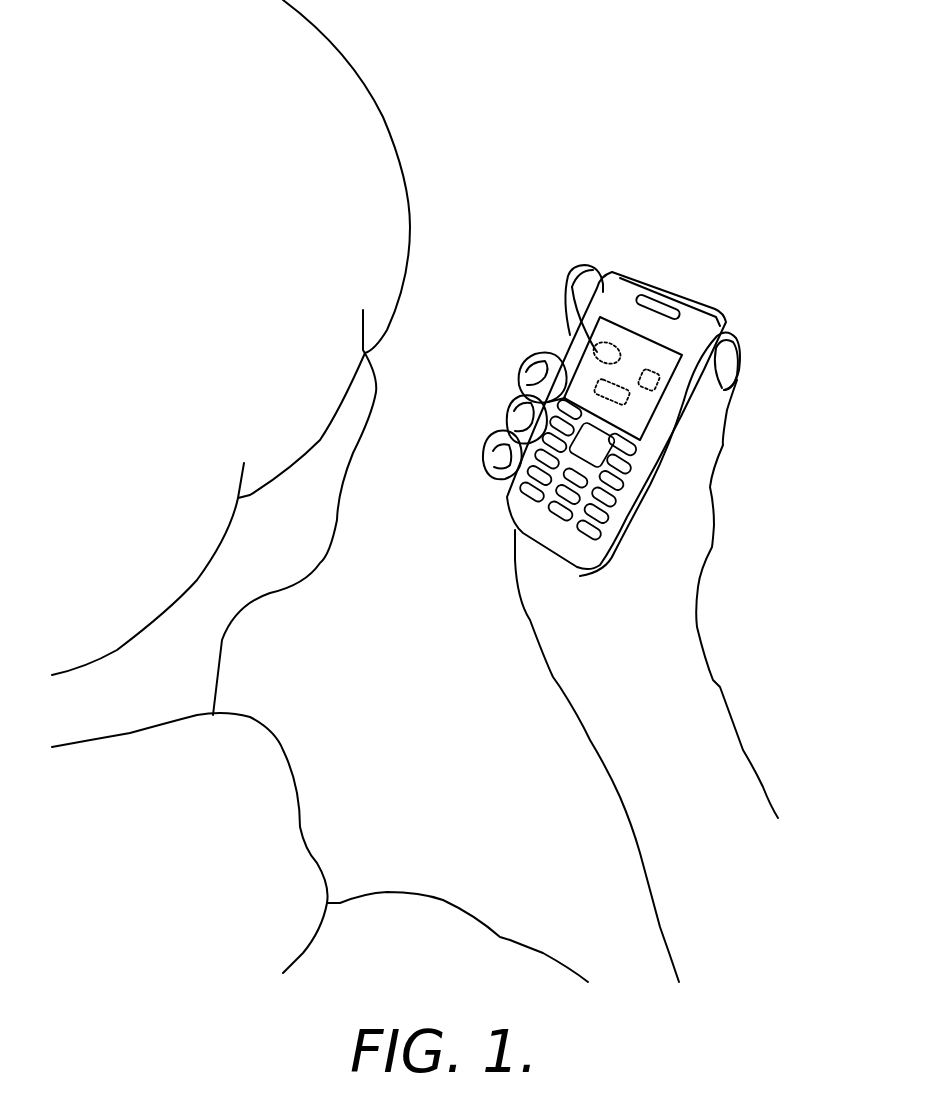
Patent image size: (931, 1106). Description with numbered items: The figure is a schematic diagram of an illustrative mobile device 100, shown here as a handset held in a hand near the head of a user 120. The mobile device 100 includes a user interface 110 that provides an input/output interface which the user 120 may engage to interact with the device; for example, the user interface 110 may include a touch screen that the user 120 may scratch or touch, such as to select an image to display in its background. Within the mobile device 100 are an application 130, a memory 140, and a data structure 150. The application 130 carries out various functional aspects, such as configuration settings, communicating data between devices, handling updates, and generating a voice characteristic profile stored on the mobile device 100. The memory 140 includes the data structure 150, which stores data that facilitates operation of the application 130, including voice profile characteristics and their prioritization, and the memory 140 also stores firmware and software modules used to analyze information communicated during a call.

The mobile device 100 is at (641, 397).
The user interface 110 is at (572, 286).
The user 120 is at (433, 190).
The application 130 is at (593, 352).
The memory 140 is at (627, 397).
The data structure 150 is at (658, 383).